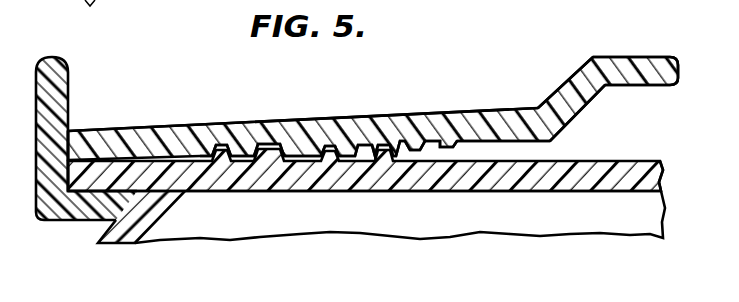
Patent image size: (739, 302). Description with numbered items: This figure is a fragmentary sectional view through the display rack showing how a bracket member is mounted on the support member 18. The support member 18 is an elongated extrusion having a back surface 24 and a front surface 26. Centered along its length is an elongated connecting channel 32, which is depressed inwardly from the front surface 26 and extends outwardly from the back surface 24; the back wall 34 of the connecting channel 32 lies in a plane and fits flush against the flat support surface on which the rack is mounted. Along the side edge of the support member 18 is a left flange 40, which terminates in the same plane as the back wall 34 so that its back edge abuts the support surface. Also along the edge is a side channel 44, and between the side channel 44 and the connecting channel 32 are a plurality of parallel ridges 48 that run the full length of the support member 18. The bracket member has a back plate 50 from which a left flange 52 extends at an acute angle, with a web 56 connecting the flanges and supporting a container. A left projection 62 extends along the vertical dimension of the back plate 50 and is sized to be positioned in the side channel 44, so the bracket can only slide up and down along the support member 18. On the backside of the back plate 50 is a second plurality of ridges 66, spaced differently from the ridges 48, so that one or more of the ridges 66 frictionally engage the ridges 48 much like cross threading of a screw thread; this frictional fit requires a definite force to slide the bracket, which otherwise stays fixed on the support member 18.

The support member 18 is at (498, 106).
The back surface 24 is at (288, 118).
The front surface 26 is at (531, 142).
The connecting channel 32 is at (630, 106).
The back wall 34 is at (640, 58).
The left flange 40 is at (57, 72).
The right side channel 44 is at (82, 164).
The ridges 48 is at (282, 166).
The back plate 50 is at (403, 184).
The left flange 52 is at (152, 214).
The web 56 is at (437, 224).
The left projection 62 is at (92, 180).
The ridges 66 is at (358, 136).